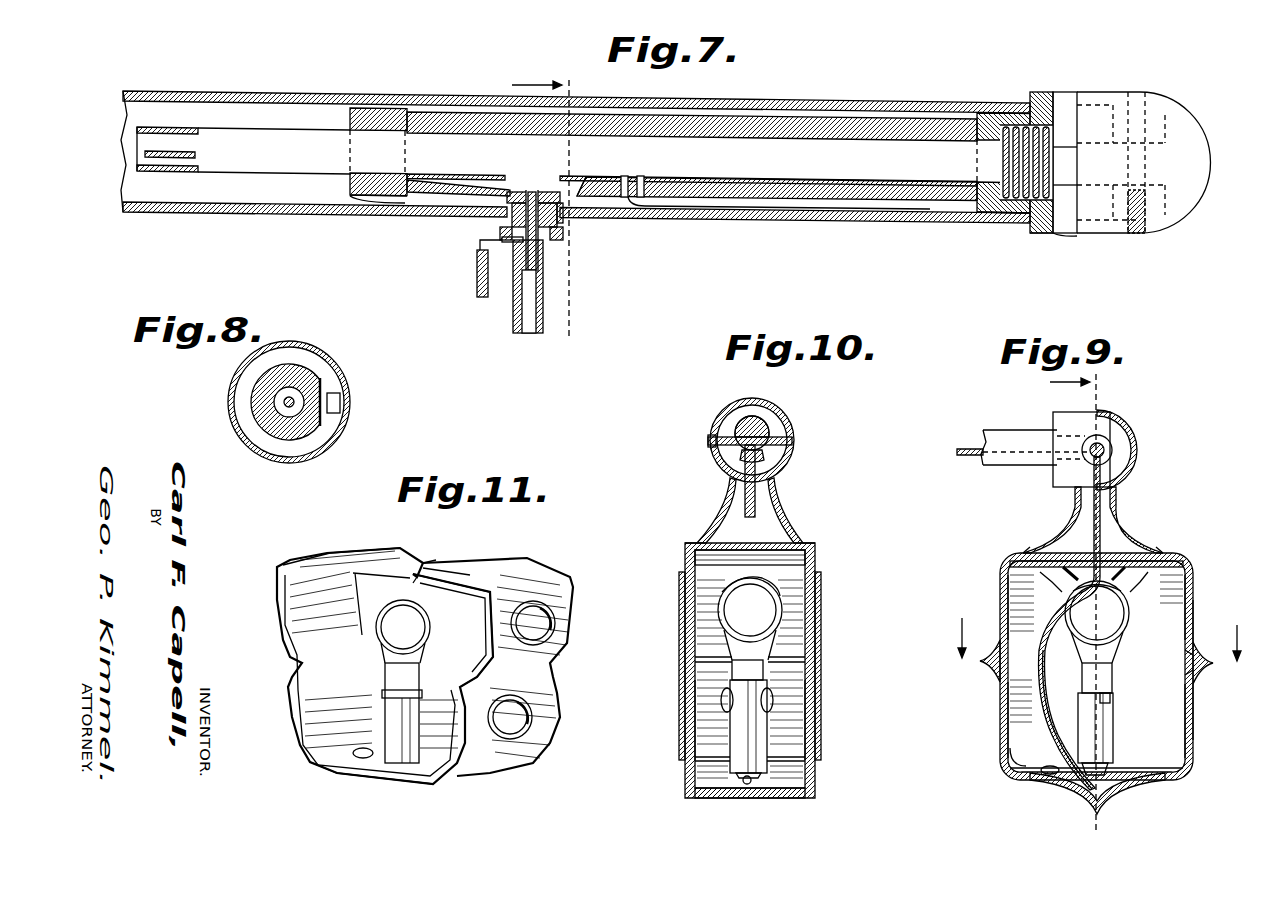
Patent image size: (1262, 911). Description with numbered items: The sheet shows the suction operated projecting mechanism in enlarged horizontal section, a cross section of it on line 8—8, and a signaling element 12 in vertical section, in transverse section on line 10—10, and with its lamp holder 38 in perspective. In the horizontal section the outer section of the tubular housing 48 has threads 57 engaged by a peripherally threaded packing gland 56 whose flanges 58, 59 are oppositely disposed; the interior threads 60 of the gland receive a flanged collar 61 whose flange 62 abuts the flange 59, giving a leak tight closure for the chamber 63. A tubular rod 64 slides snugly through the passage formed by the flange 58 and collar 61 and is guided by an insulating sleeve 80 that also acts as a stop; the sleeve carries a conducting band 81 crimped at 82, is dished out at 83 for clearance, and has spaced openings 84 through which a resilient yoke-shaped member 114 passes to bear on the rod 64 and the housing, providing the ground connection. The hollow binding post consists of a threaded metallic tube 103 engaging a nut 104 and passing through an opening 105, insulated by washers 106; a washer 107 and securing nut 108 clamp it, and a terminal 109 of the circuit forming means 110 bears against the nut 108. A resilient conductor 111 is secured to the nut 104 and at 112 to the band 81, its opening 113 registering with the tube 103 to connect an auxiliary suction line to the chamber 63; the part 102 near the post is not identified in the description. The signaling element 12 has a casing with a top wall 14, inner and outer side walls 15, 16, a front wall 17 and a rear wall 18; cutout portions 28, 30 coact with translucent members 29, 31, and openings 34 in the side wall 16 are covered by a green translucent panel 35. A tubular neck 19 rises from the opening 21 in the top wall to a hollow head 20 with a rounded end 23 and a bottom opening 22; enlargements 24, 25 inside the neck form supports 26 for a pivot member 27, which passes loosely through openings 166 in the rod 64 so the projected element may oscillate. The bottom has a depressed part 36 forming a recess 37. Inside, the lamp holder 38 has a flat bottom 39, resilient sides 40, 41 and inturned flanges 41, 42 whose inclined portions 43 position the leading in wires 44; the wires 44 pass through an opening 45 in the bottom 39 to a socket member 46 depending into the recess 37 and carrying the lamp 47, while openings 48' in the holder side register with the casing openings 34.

In FIG. 7, the section line 8— 8 is at (544, 209).
In FIG. 9, the section line 10— 10 is at (1082, 600).
In FIG. 9, the signaling element 12 is at (1089, 651).
In FIG. 9, the top wall 14 is at (1188, 556).
In FIG. 9, the inner side wall 15 is at (1002, 603).
In FIG. 9, the outer side wall 16 is at (1196, 582).
In FIG. 10, the front wall 17 is at (688, 778).
In FIG. 10, the rear wall 18 is at (806, 788).
In FIG. 10, the tubular neck 19 is at (782, 530).
In FIG. 9, the tubular neck 19 is at (1128, 522).
In FIG. 9, the hollow head 20 is at (1075, 418).
In FIG. 10, the opening in top wall 21 is at (704, 543).
In FIG. 9, the opening in top wall 21 is at (1148, 548).
In FIG. 9, the opening in head bottom 22 is at (1120, 498).
In FIG. 7, the rounded outer end of head 23 is at (1180, 122).
In FIG. 9, the rounded outer end of head 23 is at (1138, 440).
In FIG. 10, the enlargement 24 is at (738, 402).
In FIG. 10, the enlargement 25 is at (768, 418).
In FIG. 10, the supports 26 is at (707, 440).
In FIG. 7, the pivot member 27 is at (1158, 158).
In FIG. 10, the pivot member 27 is at (793, 442).
In FIG. 9, the pivot member 27 is at (1108, 438).
In FIG. 10, the cutout portions 28 is at (679, 608).
In FIG. 10, the translucent member 29 is at (695, 720).
In FIG. 10, the cutout portions 30 is at (822, 606).
In FIG. 10, the translucent panel 31 is at (806, 697).
In FIG. 9, the openings 34 is at (1196, 620).
In FIG. 9, the translucent panel 35 is at (1184, 665).
In FIG. 9, the depressed part 36 is at (1105, 812).
In FIG. 10, the recess 37 is at (751, 785).
In FIG. 9, the recess 37 is at (1085, 778).
In FIG. 11, the lamp holder 38 is at (512, 766).
In FIG. 9, the lamp holder 38 is at (1016, 760).
In FIG. 11, the flat bottom 39 is at (382, 780).
In FIG. 10, the flat bottom 39 is at (806, 758).
In FIG. 9, the flat bottom 39 is at (1114, 766).
In FIG. 11, the resilient side 40 is at (290, 718).
In FIG. 9, the resilient side 40 is at (1056, 603).
In FIG. 11, the resilient side 41 is at (306, 566).
In FIG. 9, the resilient side 41 is at (1034, 560).
In FIG. 11, the inturned flange 42 is at (480, 595).
In FIG. 10, the inturned flange 42 is at (778, 560).
In FIG. 9, the inturned flange 42 is at (1132, 577).
In FIG. 11, the inclined portions 43 is at (427, 568).
In FIG. 9, the inclined portions 43 is at (1066, 572).
In FIG. 7, the leading in wires 44 is at (178, 160).
In FIG. 8, the leading in wires 44 is at (282, 405).
In FIG. 10, the leading in wires 44 is at (756, 500).
In FIG. 9, the leading in wires 44 is at (970, 458).
In FIG. 11, the opening 45 is at (358, 760).
In FIG. 9, the opening 45 is at (1040, 774).
In FIG. 11, the socket member 46 is at (420, 715).
In FIG. 10, the socket member 46 is at (768, 735).
In FIG. 9, the socket member 46 is at (1112, 742).
In FIG. 11, the lamp 47 is at (425, 650).
In FIG. 10, the lamp 47 is at (782, 628).
In FIG. 9, the lamp 47 is at (1113, 660).
In FIG. 10, the tubular housing 48 is at (753, 640).
In FIG. 9, the tubular housing 48 is at (1119, 651).
In FIG. 11, the openings 48' is at (549, 670).
In FIG. 7, the packing gland 56 is at (1038, 100).
In FIG. 7, the threads 57 is at (988, 113).
In FIG. 7, the inner flange 58 is at (975, 216).
In FIG. 7, the outer flange 59 is at (1036, 228).
In FIG. 7, the interior threads 60 is at (1045, 125).
In FIG. 7, the flanged collar 61 is at (1068, 237).
In FIG. 7, the collar flange 62 is at (1065, 118).
In FIG. 7, the chamber 63 is at (268, 117).
In FIG. 8, the chamber 63 is at (325, 362).
In FIG. 7, the tubular rod 64 is at (283, 137).
In FIG. 8, the tubular rod 64 is at (252, 396).
In FIG. 9, the tubular rod 64 is at (1018, 442).
In FIG. 7, the sleeve 80 is at (738, 125).
In FIG. 7, the band 81 is at (387, 110).
In FIG. 7, the crimp 82 is at (348, 185).
In FIG. 7, the dished-out portion 83 is at (432, 190).
In FIG. 7, the spaced openings 84 is at (635, 205).
In FIG. 7, the valve stem 102 is at (514, 295).
In FIG. 7, the metallic tube 103 is at (500, 241).
In FIG. 7, the nut 104 is at (583, 182).
In FIG. 7, the opening 105 is at (509, 196).
In FIG. 7, the insulating washer 106 is at (564, 218).
In FIG. 7, the washer 107 is at (500, 232).
In FIG. 7, the securing nut 108 is at (564, 236).
In FIG. 8, the securing nut 108 is at (322, 428).
In FIG. 7, the terminal 109 is at (483, 290).
In FIG. 7, the circuit forming means 110 is at (476, 274).
In FIG. 7, the resilient conductor 111 is at (532, 191).
In FIG. 7, the securing point 112 is at (383, 200).
In FIG. 7, the opening 113 is at (552, 200).
In FIG. 7, the yoke-shaped member 114 is at (828, 202).
In FIG. 8, the yoke-shaped member 114 is at (342, 403).
In FIG. 9, the openings 166 is at (1106, 450).